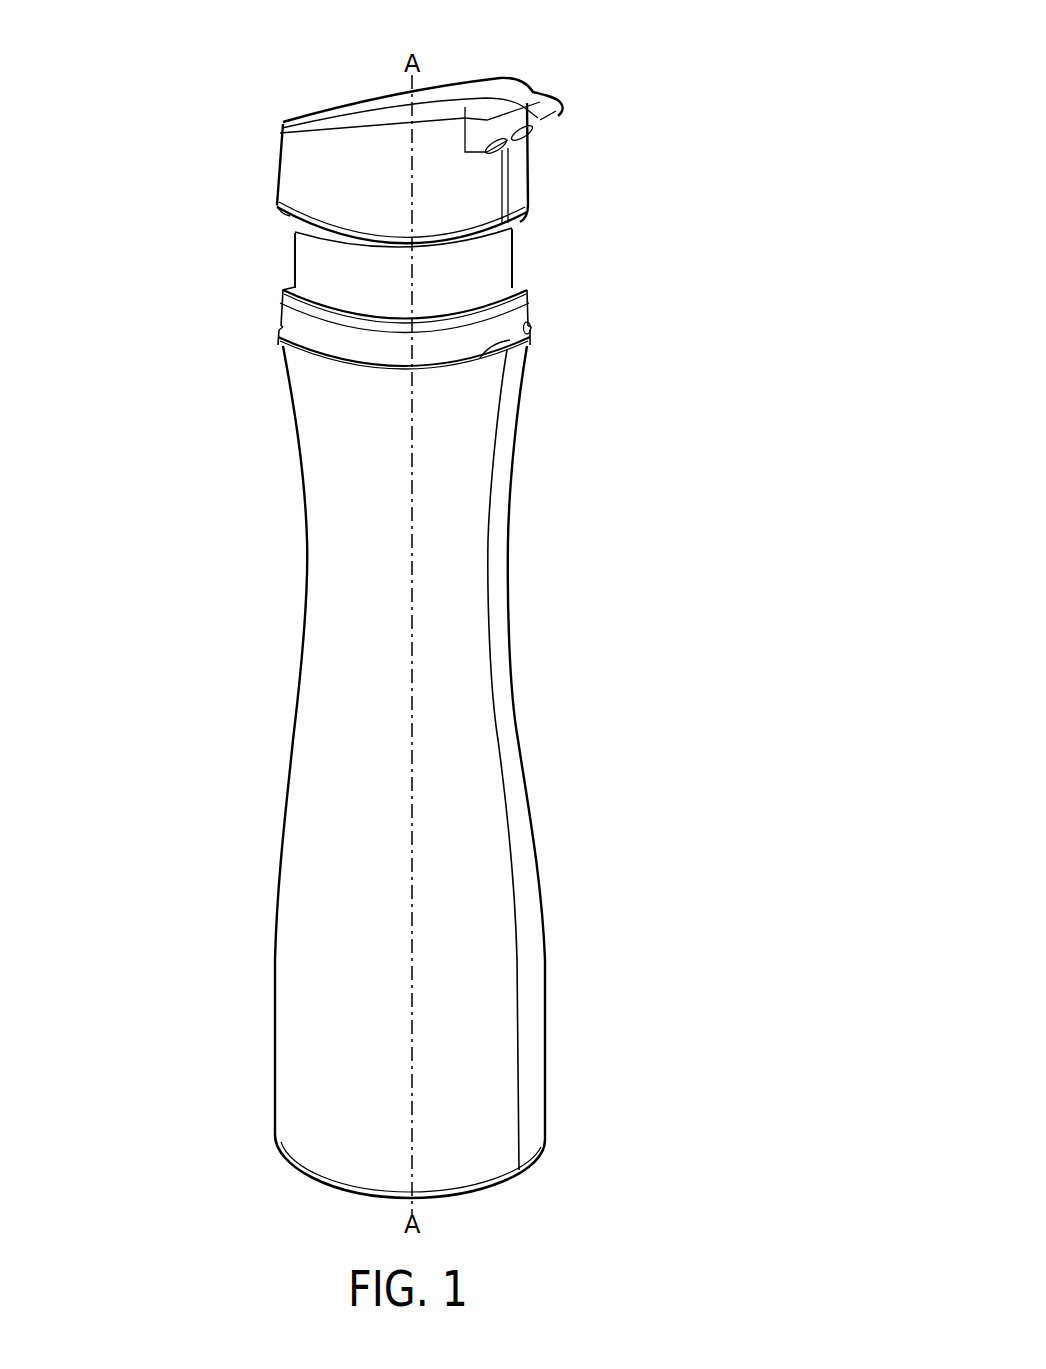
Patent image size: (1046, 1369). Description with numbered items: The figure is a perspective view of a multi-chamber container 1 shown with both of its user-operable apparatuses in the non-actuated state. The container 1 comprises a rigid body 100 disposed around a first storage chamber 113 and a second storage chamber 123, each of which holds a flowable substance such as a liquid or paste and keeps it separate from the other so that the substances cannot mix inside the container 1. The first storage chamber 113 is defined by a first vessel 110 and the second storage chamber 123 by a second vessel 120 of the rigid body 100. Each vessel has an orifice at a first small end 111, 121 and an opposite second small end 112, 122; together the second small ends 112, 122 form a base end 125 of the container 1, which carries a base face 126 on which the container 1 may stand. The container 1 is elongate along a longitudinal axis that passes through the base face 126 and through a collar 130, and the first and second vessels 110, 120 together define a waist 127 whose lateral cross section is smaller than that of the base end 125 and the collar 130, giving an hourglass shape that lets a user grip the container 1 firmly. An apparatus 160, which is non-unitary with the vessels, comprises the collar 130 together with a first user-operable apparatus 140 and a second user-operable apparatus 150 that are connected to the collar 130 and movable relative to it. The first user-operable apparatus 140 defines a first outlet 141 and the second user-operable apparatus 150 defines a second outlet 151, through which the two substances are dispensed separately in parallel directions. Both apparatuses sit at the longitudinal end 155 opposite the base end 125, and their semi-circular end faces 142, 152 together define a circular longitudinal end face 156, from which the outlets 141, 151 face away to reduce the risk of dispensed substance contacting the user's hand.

The container 1 is at (183, 499).
The rigid body 100 is at (235, 423).
The first vessel 110 is at (463, 755).
The first small end 111 is at (523, 339).
The second small end 112 is at (478, 1175).
The first storage chamber 113 is at (438, 836).
The second vessel 120 is at (511, 680).
The first small end 121 is at (531, 324).
The second small end 122 is at (535, 1132).
The second storage chamber 123 is at (494, 615).
The base end 125 is at (589, 1108).
The base face 126 is at (396, 1203).
The waist 127 is at (533, 537).
The collar 130 is at (491, 273).
The first user-operable apparatus 140 is at (446, 223).
The first outlet 141 is at (509, 143).
The semi-circular end face 142 is at (362, 120).
The second user-operable apparatus 150 is at (522, 190).
The second outlet 151 is at (545, 131).
The semi-circular end face 152 is at (483, 84).
The longitudinal end 155 is at (258, 108).
The circular longitudinal end face 156 is at (453, 65).
The apparatus 160 is at (243, 193).